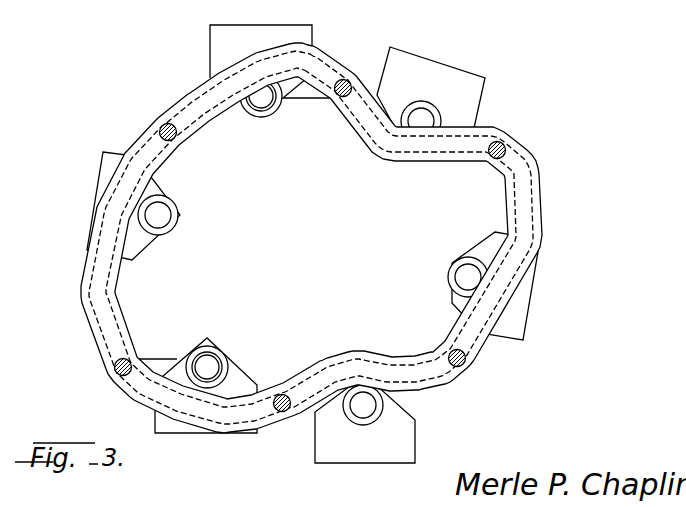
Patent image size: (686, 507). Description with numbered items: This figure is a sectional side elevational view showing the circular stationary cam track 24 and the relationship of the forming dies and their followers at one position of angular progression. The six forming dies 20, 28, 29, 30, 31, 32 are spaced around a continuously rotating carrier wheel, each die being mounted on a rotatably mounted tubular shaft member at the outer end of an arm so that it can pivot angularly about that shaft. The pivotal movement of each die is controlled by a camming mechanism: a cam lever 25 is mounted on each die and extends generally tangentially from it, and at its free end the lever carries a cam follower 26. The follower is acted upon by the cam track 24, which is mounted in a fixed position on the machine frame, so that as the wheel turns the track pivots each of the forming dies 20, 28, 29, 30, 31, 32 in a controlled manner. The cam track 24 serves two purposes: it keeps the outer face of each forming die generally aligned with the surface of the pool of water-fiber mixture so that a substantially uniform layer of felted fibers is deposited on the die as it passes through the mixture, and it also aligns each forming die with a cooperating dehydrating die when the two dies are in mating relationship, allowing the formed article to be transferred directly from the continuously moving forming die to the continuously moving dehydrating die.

The forming die 20 is at (485, 78).
The cam track 24 is at (533, 188).
The cam lever 25 is at (162, 356).
The cam follower 26 is at (126, 358).
The forming die 28 is at (312, 28).
The forming die 29 is at (107, 152).
The forming die 30 is at (255, 430).
The forming die 31 is at (415, 463).
The forming die 32 is at (523, 338).